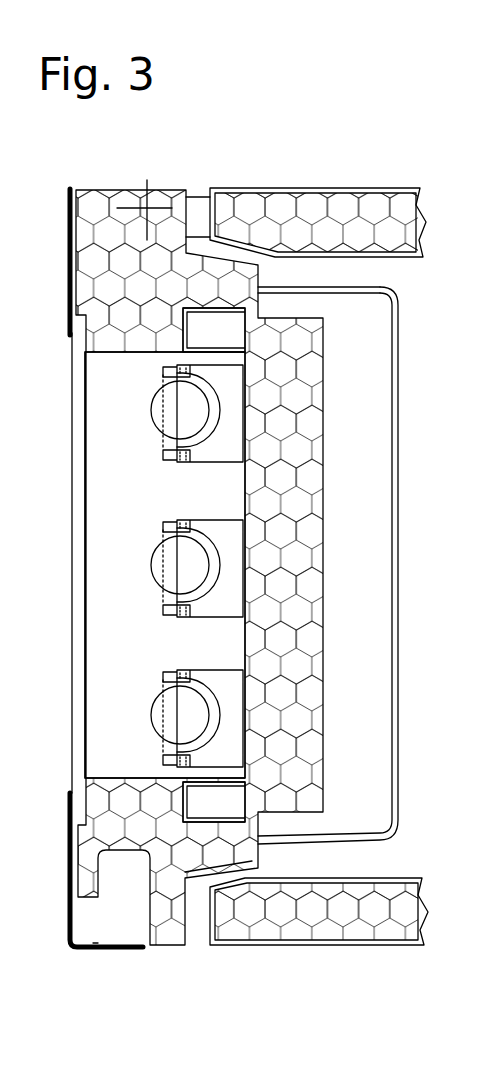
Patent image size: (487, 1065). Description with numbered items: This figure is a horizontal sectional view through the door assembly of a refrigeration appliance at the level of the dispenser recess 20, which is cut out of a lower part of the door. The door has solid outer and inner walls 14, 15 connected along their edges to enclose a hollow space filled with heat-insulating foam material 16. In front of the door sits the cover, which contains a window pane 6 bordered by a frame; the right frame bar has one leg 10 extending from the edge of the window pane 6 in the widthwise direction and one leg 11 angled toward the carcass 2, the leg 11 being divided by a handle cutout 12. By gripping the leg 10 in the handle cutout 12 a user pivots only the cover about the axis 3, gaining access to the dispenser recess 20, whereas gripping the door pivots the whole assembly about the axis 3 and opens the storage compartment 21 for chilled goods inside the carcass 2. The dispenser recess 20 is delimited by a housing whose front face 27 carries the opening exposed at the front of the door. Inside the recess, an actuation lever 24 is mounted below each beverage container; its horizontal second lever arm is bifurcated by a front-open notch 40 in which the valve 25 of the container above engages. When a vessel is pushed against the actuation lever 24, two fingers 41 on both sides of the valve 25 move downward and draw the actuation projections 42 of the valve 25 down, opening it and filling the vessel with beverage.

The carcass 2 is at (300, 205).
The axis 3 is at (150, 208).
The window pane 6 is at (63, 430).
The leg 10 is at (67, 879).
The leg 11 is at (93, 944).
The handle cutout 12 is at (120, 900).
The outer wall 14 is at (70, 252).
The inner wall 15 is at (262, 284).
The heat-insulating foam material 16 is at (165, 311).
The dispenser recess 20 is at (138, 526).
The storage compartment 21 is at (440, 409).
The actuation lever 24 is at (178, 566).
The valve 25 is at (157, 715).
The front face 27 is at (393, 788).
The notch 40 is at (192, 440).
The fingers 41 is at (195, 675).
The actuation projections 42 is at (178, 460).